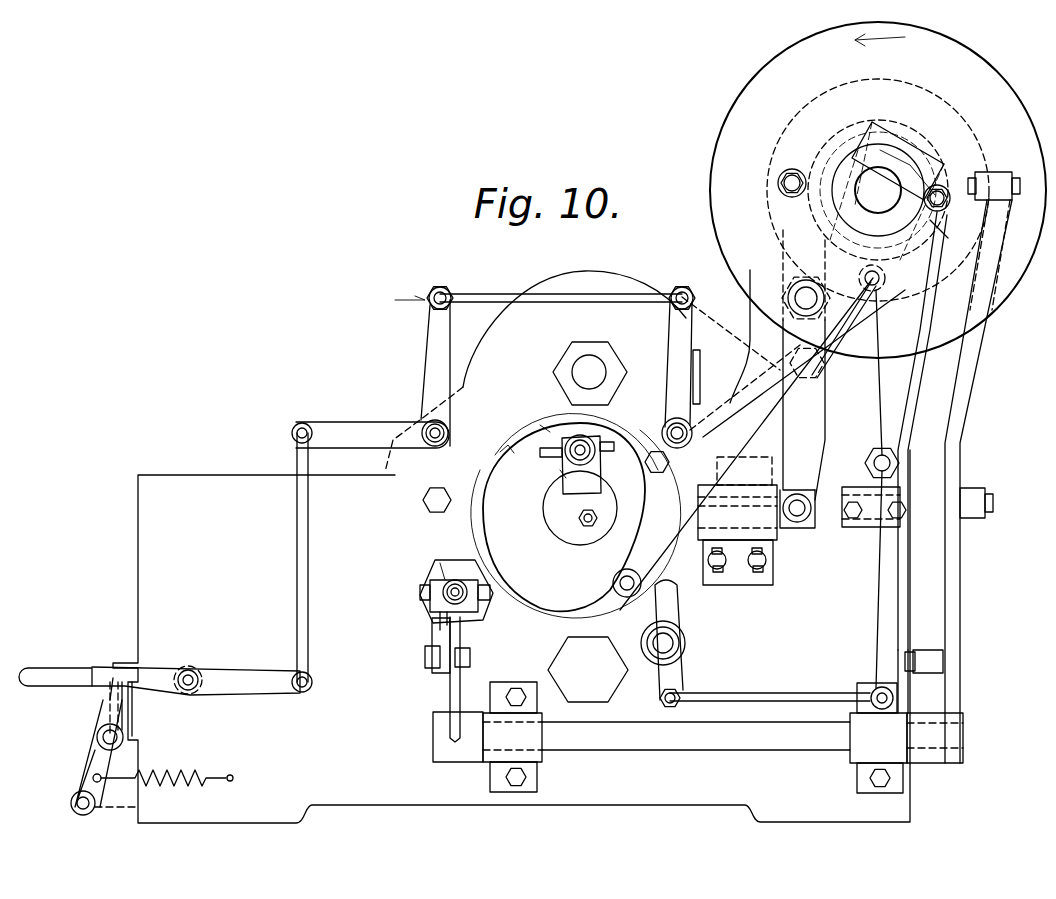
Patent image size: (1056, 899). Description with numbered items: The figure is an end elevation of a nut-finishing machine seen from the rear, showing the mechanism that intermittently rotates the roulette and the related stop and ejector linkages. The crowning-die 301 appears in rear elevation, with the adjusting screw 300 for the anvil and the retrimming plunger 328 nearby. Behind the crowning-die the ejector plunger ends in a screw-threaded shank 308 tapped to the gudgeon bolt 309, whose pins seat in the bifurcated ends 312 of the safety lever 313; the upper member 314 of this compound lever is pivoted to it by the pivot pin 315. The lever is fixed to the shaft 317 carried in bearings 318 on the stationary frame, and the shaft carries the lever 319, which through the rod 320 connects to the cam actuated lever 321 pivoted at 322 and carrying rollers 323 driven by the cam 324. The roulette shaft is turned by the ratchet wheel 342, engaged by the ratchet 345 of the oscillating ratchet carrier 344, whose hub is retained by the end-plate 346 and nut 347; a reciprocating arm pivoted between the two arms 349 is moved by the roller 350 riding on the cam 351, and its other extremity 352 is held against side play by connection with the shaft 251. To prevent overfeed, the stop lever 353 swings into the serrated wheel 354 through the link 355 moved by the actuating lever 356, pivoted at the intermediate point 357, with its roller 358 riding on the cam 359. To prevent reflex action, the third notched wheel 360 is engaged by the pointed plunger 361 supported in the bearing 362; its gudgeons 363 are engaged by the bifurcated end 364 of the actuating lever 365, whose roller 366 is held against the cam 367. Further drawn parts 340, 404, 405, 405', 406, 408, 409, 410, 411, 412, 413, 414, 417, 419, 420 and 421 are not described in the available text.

The shaft 251 is at (878, 190).
The adjusting screw 300 is at (588, 669).
The crowning-die 301 is at (422, 590).
The screw-threaded shank 308 is at (440, 575).
The gudgeon bolt 309 is at (458, 580).
The bifurcated ends 312 is at (465, 620).
The safety lever 313 is at (450, 698).
The upper member 314 is at (434, 634).
The pivot pin 315 is at (471, 657).
The shaft 317 is at (698, 737).
The bearings 318 is at (537, 778).
The lever 319 is at (955, 696).
The rod 320 is at (928, 650).
The cam actuated lever 321 is at (975, 358).
The pivot 322 is at (977, 495).
The rollers 323 is at (994, 174).
The cam 324 is at (958, 125).
The plunger 328 is at (600, 375).
The link 340 is at (737, 378).
The ratchet wheel 342 is at (560, 478).
The oscillating ratchet carrier 344 is at (581, 464).
The ratchet 345 is at (608, 450).
The end-plate 346 is at (580, 511).
The nut 347 is at (592, 514).
The arms 349 is at (614, 588).
The roller 350 is at (796, 292).
The cam 351 is at (878, 190).
The extremity 352 is at (868, 142).
The stop lever 353 is at (680, 598).
The wheel 354 is at (534, 604).
The link 355 is at (783, 694).
The actuating lever 356 is at (878, 355).
The intermediate point 357 is at (872, 455).
The roller 358 is at (948, 205).
The cam 359 is at (912, 166).
The third notched wheel 360 is at (522, 450).
The plunger 361 is at (777, 532).
The bearing 362 is at (755, 585).
The gudgeons 363 is at (808, 528).
The bifurcated end 364 is at (811, 509).
The actuating lever 365 is at (783, 212).
The roller 366 is at (791, 174).
The cam 367 is at (820, 145).
The lever 404 is at (121, 806).
The pivot 405 is at (92, 736).
The spring 405' is at (163, 761).
The bracket 406 is at (108, 688).
The bar 408 is at (232, 672).
The pivot 409 is at (187, 670).
The handle arm 410 is at (670, 330).
The rod 411 is at (800, 338).
The rod 412 is at (850, 305).
The pin 413 is at (880, 280).
The pin 414 is at (948, 236).
The link 417 is at (728, 372).
The bar 419 is at (592, 296).
The arm 420 is at (430, 356).
The rod 421 is at (298, 526).